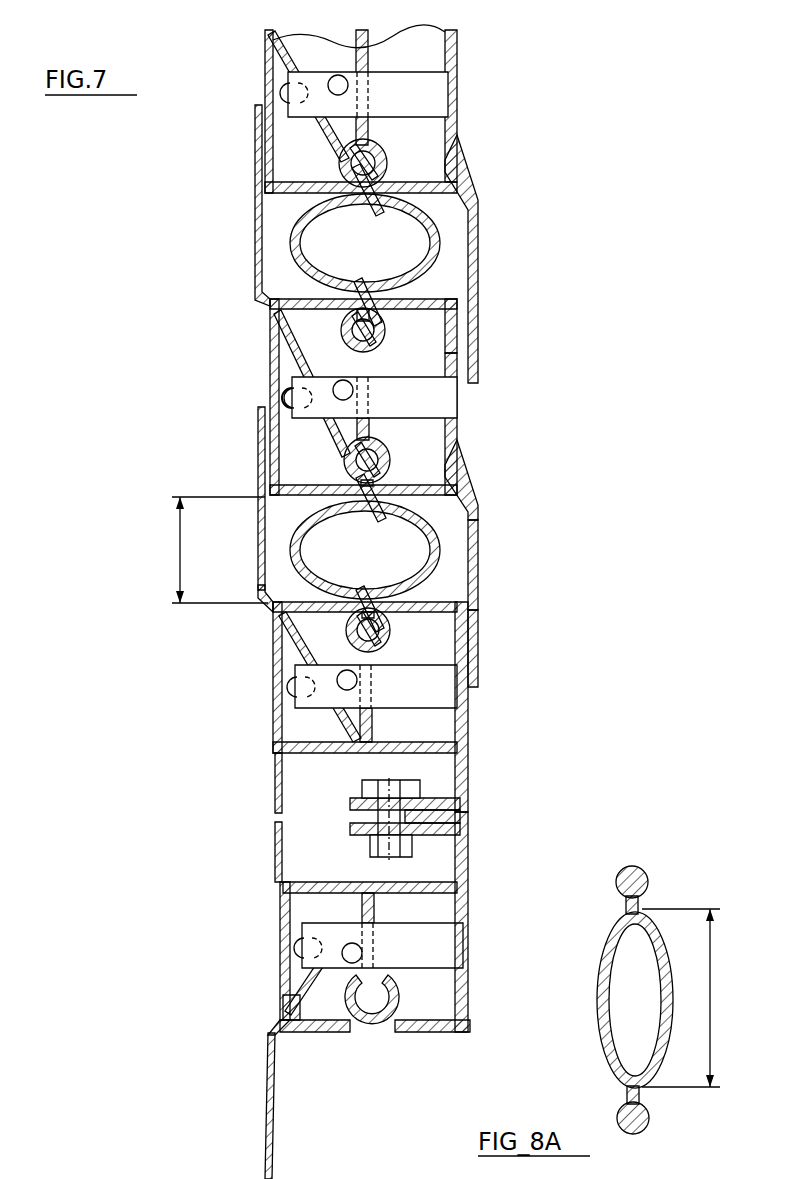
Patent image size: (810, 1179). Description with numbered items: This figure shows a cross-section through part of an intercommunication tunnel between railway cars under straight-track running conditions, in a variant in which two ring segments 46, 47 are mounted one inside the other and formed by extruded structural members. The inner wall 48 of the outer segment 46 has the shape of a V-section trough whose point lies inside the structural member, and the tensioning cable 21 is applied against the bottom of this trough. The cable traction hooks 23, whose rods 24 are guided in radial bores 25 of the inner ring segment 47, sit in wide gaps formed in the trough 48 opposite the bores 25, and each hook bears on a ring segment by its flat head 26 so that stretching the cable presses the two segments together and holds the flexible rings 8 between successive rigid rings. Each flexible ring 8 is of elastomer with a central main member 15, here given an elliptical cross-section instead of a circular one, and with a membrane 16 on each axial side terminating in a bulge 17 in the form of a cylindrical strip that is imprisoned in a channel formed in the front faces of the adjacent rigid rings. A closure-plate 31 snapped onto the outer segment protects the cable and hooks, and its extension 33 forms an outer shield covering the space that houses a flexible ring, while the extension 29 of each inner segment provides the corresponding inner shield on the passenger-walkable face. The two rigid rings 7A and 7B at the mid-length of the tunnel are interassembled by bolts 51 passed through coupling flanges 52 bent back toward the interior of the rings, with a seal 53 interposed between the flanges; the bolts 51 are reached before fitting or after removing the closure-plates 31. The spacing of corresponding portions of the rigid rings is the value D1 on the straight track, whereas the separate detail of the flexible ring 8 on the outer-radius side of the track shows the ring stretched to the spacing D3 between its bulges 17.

In FIG. 7, the rigid ring 7A is at (467, 745).
In FIG. 7, the rigid ring 7B is at (474, 881).
In FIG. 7, the flexible ring 8 is at (438, 212).
In FIG. 8A, the flexible ring 8 is at (600, 1010).
In FIG. 7, the central main member 15 is at (478, 572).
In FIG. 7, the membrane 16 is at (462, 468).
In FIG. 7, the bulge 17 is at (442, 628).
In FIG. 8A, the bulge 17 is at (647, 876).
In FIG. 7, the tensioning cable 21 is at (292, 398).
In FIG. 7, the cable traction hook 23 is at (362, 286).
In FIG. 7, the rod 24 is at (452, 350).
In FIG. 7, the radial bore 25 is at (394, 330).
In FIG. 7, the flat head 26 is at (458, 362).
In FIG. 7, the inner shield extension 29 is at (480, 618).
In FIG. 7, the closure-plate 31 is at (272, 352).
In FIG. 7, the outer shield extension 33 is at (264, 195).
In FIG. 7, the outer ring segment 46 is at (265, 585).
In FIG. 7, the inner ring segment 47 is at (390, 485).
In FIG. 7, the V-section trough 48 is at (290, 372).
In FIG. 7, the bolt 51 is at (388, 845).
In FIG. 7, the coupling flange 52 is at (462, 790).
In FIG. 7, the seal 53 is at (465, 818).
In FIG. 7, the relative spacing D1 is at (208, 550).
In FIG. 8A, the relative spacing D3 is at (696, 998).